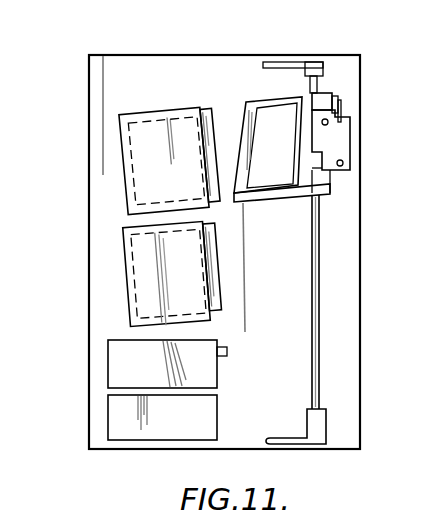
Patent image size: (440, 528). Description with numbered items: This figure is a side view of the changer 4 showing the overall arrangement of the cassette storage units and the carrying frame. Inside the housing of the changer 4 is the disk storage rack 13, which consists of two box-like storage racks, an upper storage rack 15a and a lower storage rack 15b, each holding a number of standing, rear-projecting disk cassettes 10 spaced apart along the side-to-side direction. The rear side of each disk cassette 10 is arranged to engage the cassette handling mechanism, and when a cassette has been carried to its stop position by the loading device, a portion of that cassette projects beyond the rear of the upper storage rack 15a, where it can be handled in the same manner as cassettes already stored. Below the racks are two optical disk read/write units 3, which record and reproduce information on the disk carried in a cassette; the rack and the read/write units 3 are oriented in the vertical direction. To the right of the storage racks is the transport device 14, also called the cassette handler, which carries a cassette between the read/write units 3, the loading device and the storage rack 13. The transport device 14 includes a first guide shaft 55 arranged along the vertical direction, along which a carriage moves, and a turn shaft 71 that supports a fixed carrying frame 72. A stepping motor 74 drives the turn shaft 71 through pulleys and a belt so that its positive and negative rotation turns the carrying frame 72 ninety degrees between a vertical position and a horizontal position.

The changer 4 is at (158, 54).
The disk storage rack 13 is at (149, 110).
The upper storage rack 15a is at (121, 128).
The lower storage rack 15b is at (125, 240).
The disk cassette 10 is at (211, 117).
The optical disk read/write unit 3 is at (108, 362).
The carrying frame 72 is at (260, 103).
The stepping motor 74 is at (321, 97).
The transport device 14 is at (343, 87).
The turn shaft 71 is at (318, 144).
The first guide shaft 55 is at (320, 330).